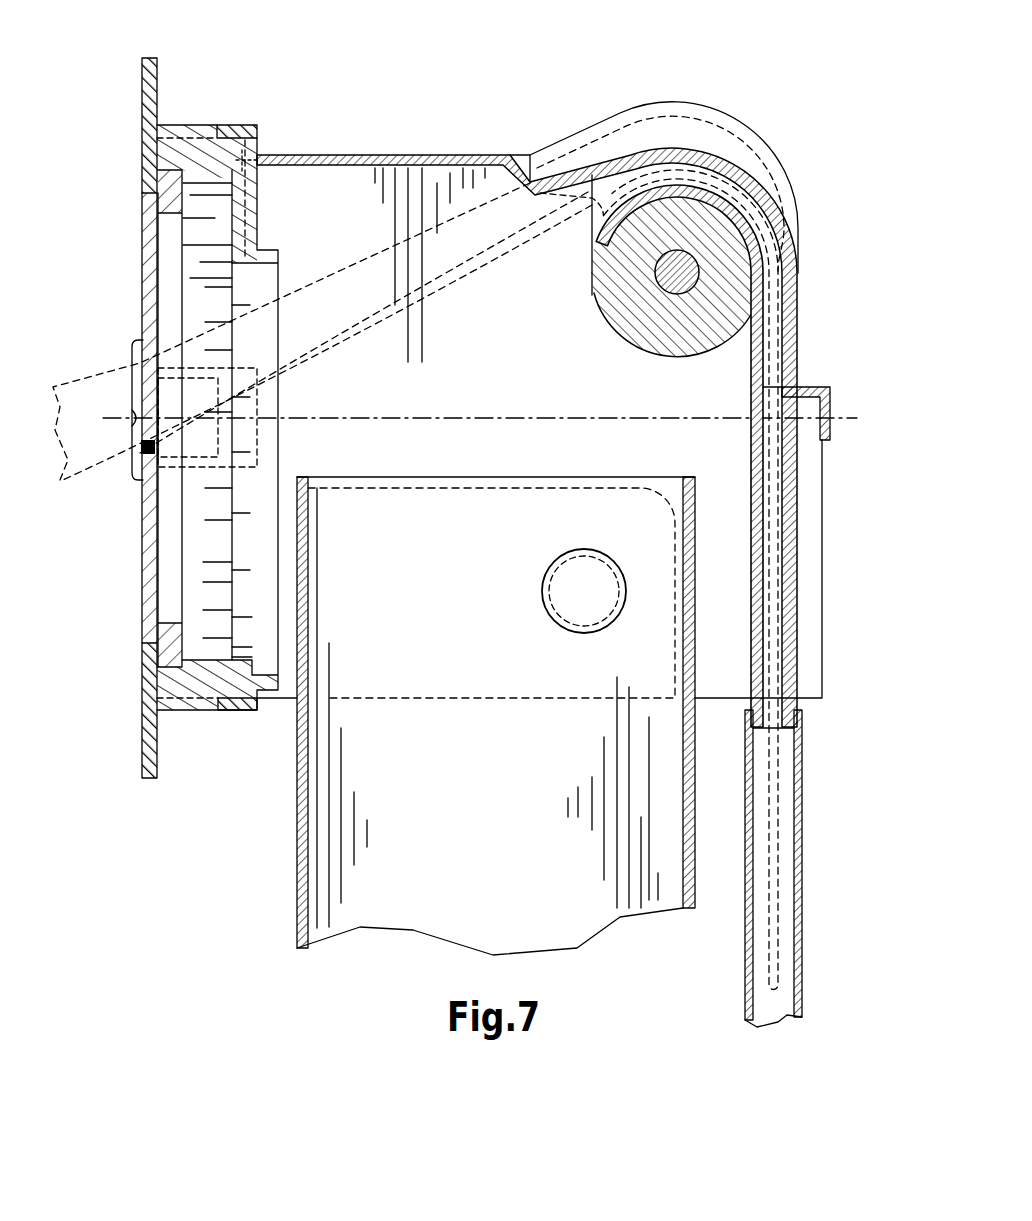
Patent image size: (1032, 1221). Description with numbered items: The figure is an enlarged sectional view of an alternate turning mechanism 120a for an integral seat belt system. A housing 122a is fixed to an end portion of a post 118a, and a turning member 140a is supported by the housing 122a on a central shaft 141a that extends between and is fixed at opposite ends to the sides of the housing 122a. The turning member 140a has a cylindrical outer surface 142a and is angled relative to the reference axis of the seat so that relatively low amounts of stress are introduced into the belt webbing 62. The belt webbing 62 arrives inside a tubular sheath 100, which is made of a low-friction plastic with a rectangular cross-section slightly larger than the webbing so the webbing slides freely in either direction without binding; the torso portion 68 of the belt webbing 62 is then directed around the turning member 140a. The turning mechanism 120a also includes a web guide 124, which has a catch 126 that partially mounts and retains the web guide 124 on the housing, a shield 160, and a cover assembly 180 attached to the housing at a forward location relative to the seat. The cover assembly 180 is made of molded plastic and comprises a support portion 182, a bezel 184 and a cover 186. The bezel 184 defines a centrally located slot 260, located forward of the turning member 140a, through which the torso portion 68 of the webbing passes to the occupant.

The belt webbing 62 is at (792, 908).
The torso portion 68 is at (105, 400).
The sheath 100 is at (803, 845).
The post 118a is at (297, 803).
The turning mechanism 120a is at (828, 94).
The housing 122a is at (330, 190).
The web guide 124 is at (816, 370).
The catch 126 is at (832, 398).
The turning member 140a is at (616, 351).
The central shaft 141a is at (690, 276).
The cylindrical outer surface 142a is at (592, 265).
The shield 160 is at (460, 155).
The cover assembly 180 is at (200, 85).
The support portion 182 is at (237, 130).
The bezel 184 is at (147, 240).
The cover 186 is at (142, 73).
The slot 260 is at (135, 467).